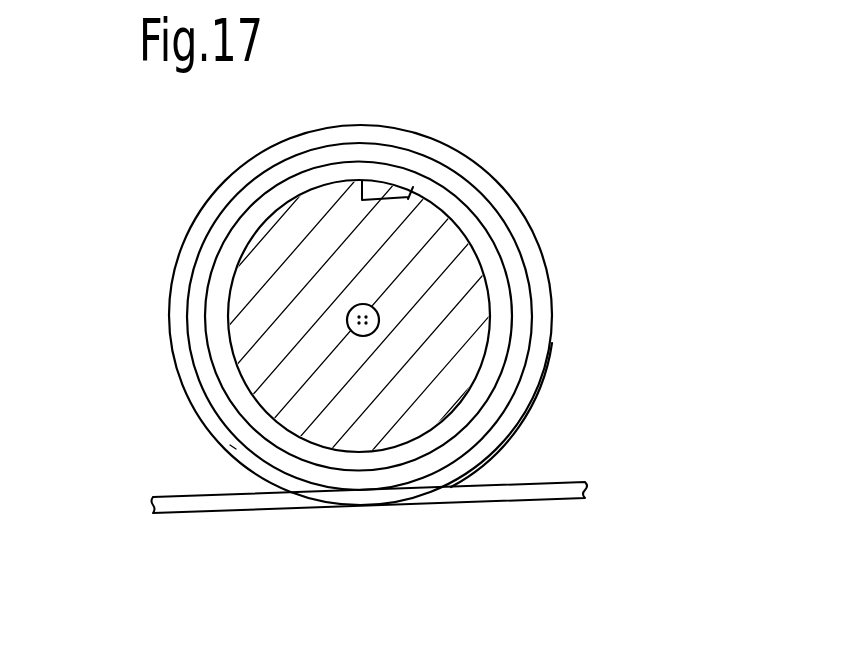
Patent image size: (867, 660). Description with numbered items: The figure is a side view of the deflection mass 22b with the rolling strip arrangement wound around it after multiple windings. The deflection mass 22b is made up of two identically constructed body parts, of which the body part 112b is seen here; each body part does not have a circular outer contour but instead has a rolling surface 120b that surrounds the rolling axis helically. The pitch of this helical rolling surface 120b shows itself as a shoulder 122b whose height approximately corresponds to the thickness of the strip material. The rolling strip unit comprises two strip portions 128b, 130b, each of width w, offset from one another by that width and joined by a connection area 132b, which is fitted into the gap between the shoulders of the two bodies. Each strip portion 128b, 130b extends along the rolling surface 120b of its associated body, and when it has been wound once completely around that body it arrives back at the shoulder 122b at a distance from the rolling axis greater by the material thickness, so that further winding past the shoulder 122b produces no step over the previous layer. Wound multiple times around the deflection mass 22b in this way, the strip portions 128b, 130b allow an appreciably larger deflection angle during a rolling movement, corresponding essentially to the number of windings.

The body part 112b is at (426, 232).
The deflection mass 22b is at (245, 319).
The shoulder 122b is at (363, 180).
The connection area 132b is at (397, 197).
The rolling surface 120b is at (490, 356).
The strip portion 128b is at (495, 280).
The strip portion 130b is at (572, 493).